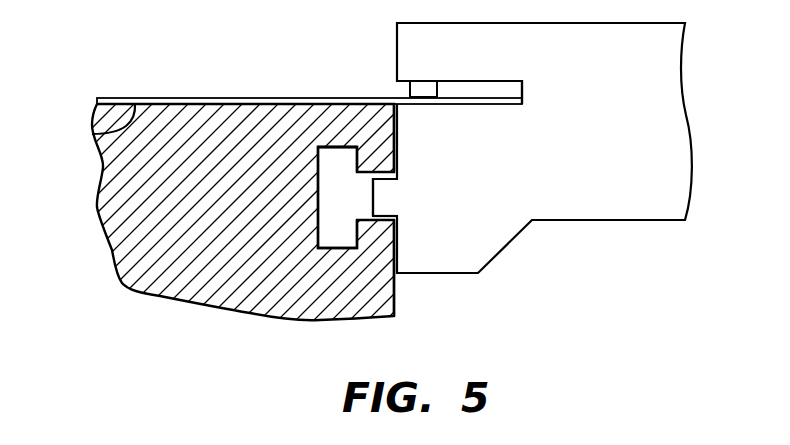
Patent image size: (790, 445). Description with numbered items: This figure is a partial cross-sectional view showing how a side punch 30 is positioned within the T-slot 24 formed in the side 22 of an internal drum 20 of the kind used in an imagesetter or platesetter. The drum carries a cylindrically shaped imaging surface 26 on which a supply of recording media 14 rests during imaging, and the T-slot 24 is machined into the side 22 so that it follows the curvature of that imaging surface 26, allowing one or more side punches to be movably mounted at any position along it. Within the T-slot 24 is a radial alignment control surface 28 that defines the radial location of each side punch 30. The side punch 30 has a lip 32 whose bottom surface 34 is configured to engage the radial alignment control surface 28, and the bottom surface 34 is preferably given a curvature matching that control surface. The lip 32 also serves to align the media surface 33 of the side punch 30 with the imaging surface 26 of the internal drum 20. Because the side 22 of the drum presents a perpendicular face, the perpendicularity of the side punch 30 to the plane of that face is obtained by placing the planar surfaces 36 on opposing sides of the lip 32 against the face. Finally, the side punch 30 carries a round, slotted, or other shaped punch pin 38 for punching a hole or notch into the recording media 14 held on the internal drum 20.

The recording media 14 is at (200, 97).
The internal drum 20 is at (140, 253).
The side 22 is at (394, 294).
The T-slot 24 is at (335, 177).
The imaging surface 26 is at (114, 131).
The radial alignment control surface 28 is at (370, 216).
The side punch 30 is at (660, 117).
The lip 32 is at (376, 188).
The media surface 33 is at (486, 105).
The bottom surface 34 is at (382, 213).
The planar surfaces 36 is at (398, 133).
The punch pin 38 is at (410, 89).